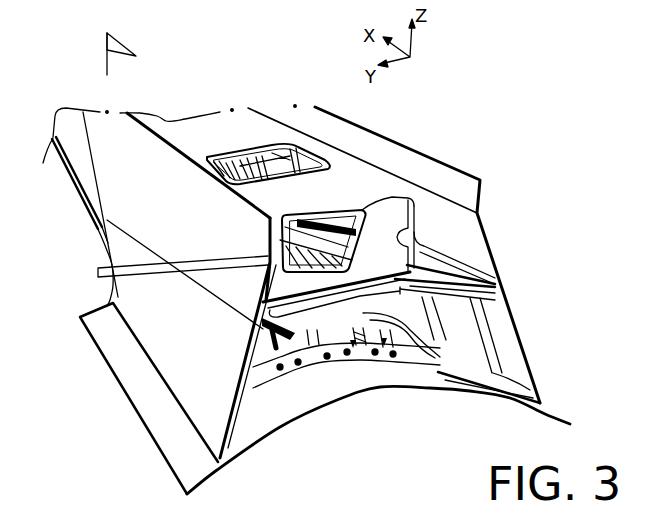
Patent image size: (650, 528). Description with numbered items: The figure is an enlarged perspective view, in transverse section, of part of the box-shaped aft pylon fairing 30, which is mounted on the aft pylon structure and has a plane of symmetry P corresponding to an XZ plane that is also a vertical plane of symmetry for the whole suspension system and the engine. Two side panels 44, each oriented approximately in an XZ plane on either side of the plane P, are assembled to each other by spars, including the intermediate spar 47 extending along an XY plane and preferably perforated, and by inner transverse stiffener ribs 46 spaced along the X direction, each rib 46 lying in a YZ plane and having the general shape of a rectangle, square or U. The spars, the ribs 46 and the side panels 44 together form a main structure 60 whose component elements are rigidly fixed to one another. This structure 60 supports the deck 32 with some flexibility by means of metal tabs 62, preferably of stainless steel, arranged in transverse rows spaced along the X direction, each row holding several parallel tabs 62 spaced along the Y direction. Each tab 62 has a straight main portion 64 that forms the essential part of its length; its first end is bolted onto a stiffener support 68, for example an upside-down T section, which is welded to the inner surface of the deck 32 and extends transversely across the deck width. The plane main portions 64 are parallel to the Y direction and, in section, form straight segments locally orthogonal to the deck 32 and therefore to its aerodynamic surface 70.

The plane of symmetry P is at (107, 47).
The aft pylon fairing 30 is at (189, 84).
The deck 32 is at (367, 395).
The side panels 44 is at (260, 212).
The inner transverse stiffener ribs 46 is at (477, 228).
The intermediate spar 47 is at (373, 273).
The main structure 60 is at (278, 109).
The metal tabs 62 is at (385, 367).
The straight main portion 64 is at (272, 372).
The stiffener support 68 is at (273, 377).
The aerodynamic surface 70 is at (338, 393).